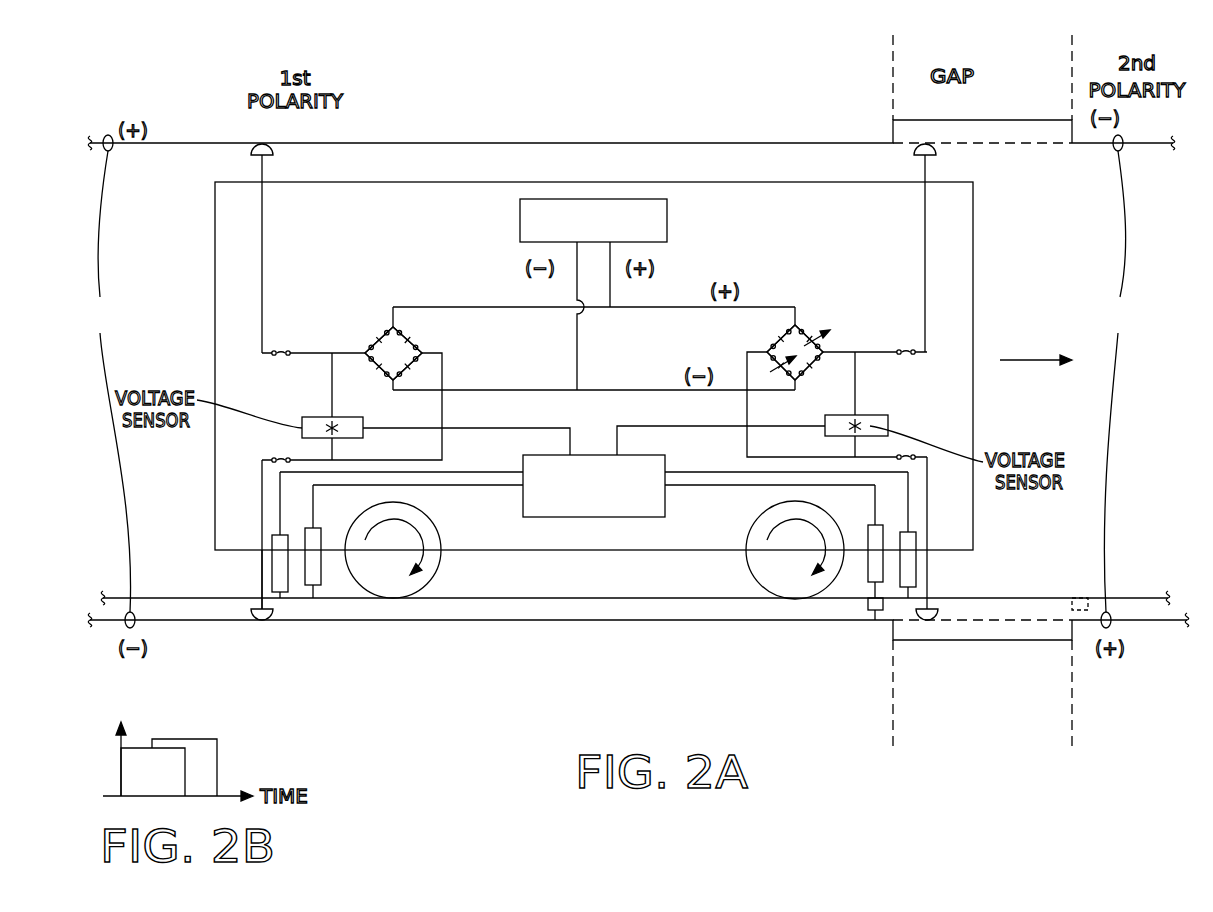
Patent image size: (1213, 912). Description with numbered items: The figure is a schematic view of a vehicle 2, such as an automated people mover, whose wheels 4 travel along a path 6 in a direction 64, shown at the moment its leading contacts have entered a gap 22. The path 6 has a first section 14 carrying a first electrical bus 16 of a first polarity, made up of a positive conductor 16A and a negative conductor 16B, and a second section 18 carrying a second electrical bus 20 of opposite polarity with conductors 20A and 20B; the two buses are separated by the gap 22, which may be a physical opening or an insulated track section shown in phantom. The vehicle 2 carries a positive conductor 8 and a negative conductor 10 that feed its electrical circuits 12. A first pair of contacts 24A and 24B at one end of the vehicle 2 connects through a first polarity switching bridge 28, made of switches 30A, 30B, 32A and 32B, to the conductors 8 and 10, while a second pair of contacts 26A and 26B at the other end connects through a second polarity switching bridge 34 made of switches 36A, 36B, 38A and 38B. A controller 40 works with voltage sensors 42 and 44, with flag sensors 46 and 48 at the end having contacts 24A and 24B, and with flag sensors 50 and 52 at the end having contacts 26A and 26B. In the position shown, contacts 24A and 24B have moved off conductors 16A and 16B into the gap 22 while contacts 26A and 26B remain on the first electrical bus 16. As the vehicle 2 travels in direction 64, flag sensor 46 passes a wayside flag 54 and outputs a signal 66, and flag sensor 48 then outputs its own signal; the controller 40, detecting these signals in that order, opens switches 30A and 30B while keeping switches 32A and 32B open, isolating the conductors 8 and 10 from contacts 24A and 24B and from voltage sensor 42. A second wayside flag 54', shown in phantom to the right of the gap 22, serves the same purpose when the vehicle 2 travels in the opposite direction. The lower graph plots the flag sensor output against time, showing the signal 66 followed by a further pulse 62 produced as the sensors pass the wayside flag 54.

In FIG. 2A, the vehicle 2 is at (973, 268).
In FIG. 2A, the wheels 4 is at (438, 526).
In FIG. 2A, the path 6 is at (492, 602).
In FIG. 2A, the positive conductor 8 is at (672, 307).
In FIG. 2A, the negative conductor 10 is at (596, 390).
In FIG. 2A, the electrical circuits 12 is at (520, 222).
In FIG. 2A, the first section 14 is at (585, 660).
In FIG. 2A, the first electrical bus 16 is at (114, 381).
In FIG. 2A, the positive conductor 16A is at (428, 143).
In FIG. 2A, the negative conductor 16B is at (428, 622).
In FIG. 2A, the second section 18 is at (1129, 683).
In FIG. 2A, the second electrical bus 20 is at (1117, 381).
In FIG. 2A, the conductor 20A is at (1147, 145).
In FIG. 2A, the conductor 20B is at (1140, 622).
In FIG. 2A, the gap 22 is at (990, 100).
In FIG. 2A, the contact 24A is at (932, 149).
In FIG. 2A, the contact 24B is at (921, 620).
In FIG. 2A, the contact 26A is at (252, 148).
In FIG. 2A, the contact 26B is at (262, 622).
In FIG. 2A, the first polarity switching bridge 28 is at (810, 315).
In FIG. 2A, the switch 30A is at (818, 340).
In FIG. 2A, the switch 30B is at (780, 365).
In FIG. 2A, the switch 32A is at (815, 370).
In FIG. 2A, the switch 32B is at (778, 338).
In FIG. 2A, the second polarity switching bridge 34 is at (384, 315).
In FIG. 2A, the switch 36A is at (408, 330).
In FIG. 2A, the switch 36B is at (373, 372).
In FIG. 2A, the switch 38A is at (415, 365).
In FIG. 2A, the switch 38B is at (372, 330).
In FIG. 2A, the controller 40 is at (668, 458).
In FIG. 2A, the voltage sensor 42 is at (888, 415).
In FIG. 2A, the voltage sensor 44 is at (318, 417).
In FIG. 2A, the flag sensor 46 is at (912, 558).
In FIG. 2A, the flag sensor 48 is at (868, 565).
In FIG. 2A, the flag sensor 50 is at (312, 605).
In FIG. 2A, the flag sensor 52 is at (272, 575).
In FIG. 2A, the wayside flag 54 is at (836, 650).
In FIG. 2A, the wayside flag 54' is at (1061, 564).
In FIG. 2B, the voltage pulse 62 is at (195, 739).
In FIG. 2A, the direction 64 is at (1028, 360).
In FIG. 2B, the signal 66 is at (143, 748).